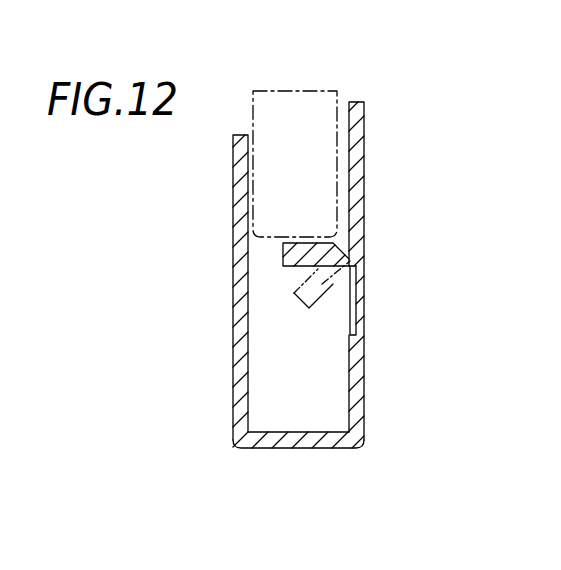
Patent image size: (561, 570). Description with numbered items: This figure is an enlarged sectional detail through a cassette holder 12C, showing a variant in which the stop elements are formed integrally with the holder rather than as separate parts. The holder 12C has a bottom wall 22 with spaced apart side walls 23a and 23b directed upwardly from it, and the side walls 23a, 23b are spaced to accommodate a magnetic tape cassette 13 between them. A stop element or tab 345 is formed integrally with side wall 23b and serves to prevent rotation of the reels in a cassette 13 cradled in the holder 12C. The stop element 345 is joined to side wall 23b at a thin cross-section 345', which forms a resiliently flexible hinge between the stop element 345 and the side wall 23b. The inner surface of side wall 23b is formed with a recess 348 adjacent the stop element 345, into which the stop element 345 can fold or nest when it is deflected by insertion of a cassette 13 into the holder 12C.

The holder 12C is at (307, 302).
The cassette 13 is at (310, 91).
The bottom wall 22 is at (282, 449).
The side wall 23a is at (232, 312).
The side wall 23b is at (366, 108).
The stop element 345 is at (260, 257).
The thin cross-section 345' is at (389, 284).
The recess 348 is at (333, 318).